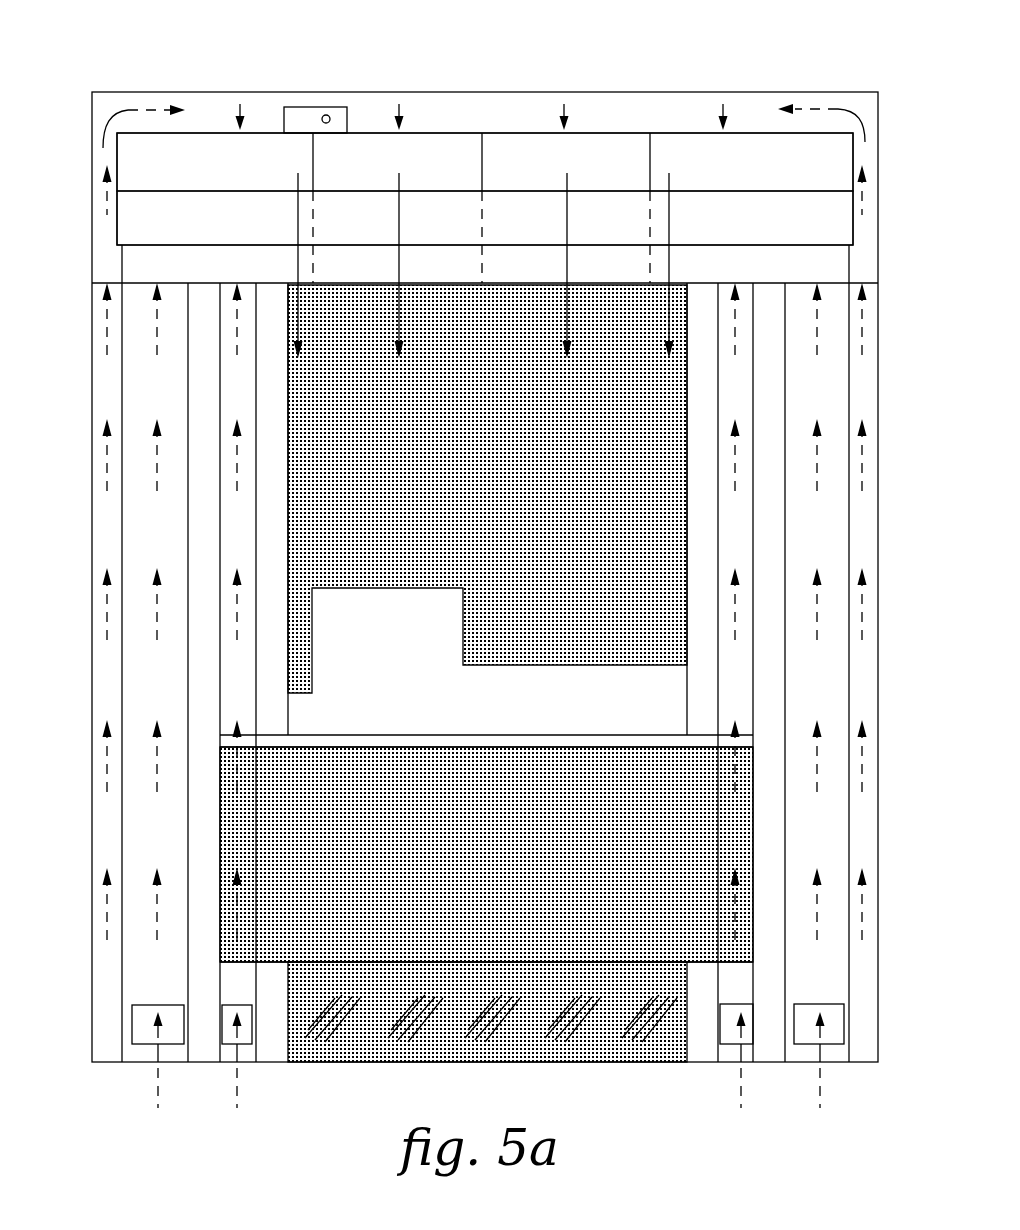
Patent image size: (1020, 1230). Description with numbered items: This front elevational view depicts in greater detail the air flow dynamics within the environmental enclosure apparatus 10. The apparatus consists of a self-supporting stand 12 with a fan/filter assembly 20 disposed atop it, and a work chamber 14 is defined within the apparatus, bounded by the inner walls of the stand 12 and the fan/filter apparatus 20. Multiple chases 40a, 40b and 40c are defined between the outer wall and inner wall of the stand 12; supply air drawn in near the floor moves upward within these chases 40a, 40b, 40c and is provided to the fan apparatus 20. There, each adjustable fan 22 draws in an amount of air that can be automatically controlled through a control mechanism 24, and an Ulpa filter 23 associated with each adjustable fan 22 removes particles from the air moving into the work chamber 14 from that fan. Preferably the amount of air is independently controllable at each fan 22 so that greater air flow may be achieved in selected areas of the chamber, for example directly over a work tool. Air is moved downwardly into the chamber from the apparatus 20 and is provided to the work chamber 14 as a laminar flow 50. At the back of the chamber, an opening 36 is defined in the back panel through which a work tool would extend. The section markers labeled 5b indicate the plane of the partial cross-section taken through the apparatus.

The environmental enclosure apparatus 10 is at (93, 75).
The self-supporting stand 12 is at (882, 806).
The work chamber 14 is at (584, 563).
The fan/filter assembly 20 is at (880, 208).
The adjustable fan 22 is at (230, 173).
The Ulpa filter 23 is at (230, 227).
The control mechanism 24 is at (322, 107).
The opening 36 is at (413, 690).
The chase 40a is at (840, 400).
The chase 40b is at (862, 712).
The chase 40c is at (774, 574).
The laminar flow 50 is at (300, 296).
The section line 5b is at (138, 150).